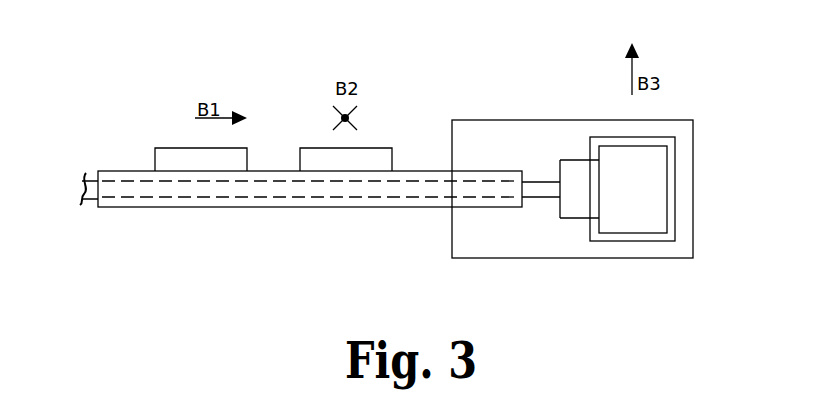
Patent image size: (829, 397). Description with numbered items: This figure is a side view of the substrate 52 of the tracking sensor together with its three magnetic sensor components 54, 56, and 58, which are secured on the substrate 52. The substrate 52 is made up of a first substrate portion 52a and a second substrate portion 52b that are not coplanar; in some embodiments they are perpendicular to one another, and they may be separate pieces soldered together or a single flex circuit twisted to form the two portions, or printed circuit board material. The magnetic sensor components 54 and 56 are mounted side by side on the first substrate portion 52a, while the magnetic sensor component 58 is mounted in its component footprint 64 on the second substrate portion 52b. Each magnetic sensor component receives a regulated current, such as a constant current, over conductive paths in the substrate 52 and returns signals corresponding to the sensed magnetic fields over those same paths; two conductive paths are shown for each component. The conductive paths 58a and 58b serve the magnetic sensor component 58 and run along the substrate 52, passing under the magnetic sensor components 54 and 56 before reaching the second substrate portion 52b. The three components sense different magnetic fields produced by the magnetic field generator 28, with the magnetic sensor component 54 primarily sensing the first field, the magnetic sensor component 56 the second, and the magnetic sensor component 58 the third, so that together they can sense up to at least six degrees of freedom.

The magnetic field generator 28 is at (497, 258).
The substrate 52 is at (446, 243).
The first substrate portion 52a is at (143, 190).
The second substrate portion 52b is at (693, 230).
The magnetic sensor component 54 is at (167, 158).
The magnetic sensor component 56 is at (313, 158).
The magnetic sensor component 58 is at (630, 218).
The conductive path 58a is at (275, 183).
The conductive path 58b is at (223, 197).
The component footprint 64 is at (677, 138).